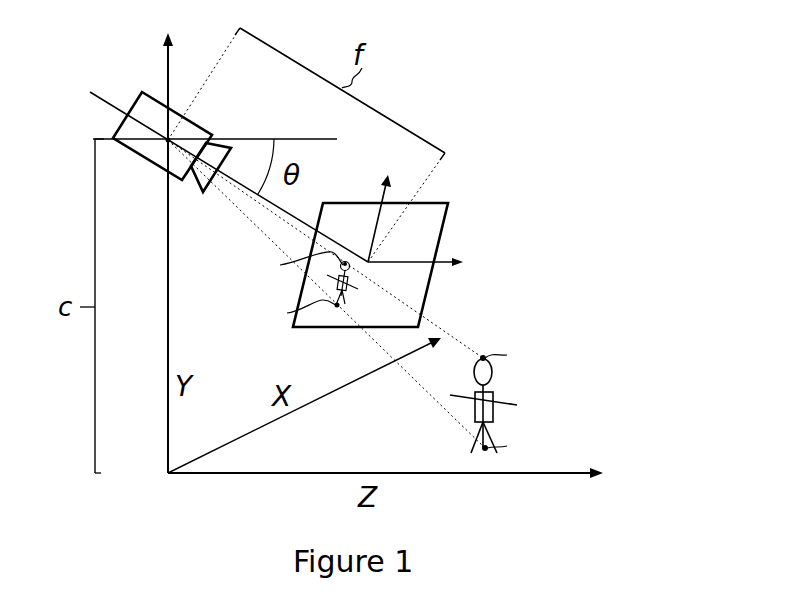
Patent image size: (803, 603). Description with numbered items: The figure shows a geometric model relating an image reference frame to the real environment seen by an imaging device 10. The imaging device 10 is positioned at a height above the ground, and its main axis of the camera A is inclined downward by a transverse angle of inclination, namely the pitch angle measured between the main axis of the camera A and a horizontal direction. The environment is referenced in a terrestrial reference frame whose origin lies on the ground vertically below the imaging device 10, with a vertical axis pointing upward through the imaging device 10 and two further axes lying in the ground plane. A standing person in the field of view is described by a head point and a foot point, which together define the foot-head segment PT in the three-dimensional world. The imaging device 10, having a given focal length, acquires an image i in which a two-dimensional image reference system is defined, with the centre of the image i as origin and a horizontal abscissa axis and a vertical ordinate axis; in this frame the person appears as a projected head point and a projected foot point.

The imaging device 10 is at (152, 110).
The main axis of the camera A is at (104, 100).
The image i is at (433, 218).
The foot-head segment PT is at (490, 382).